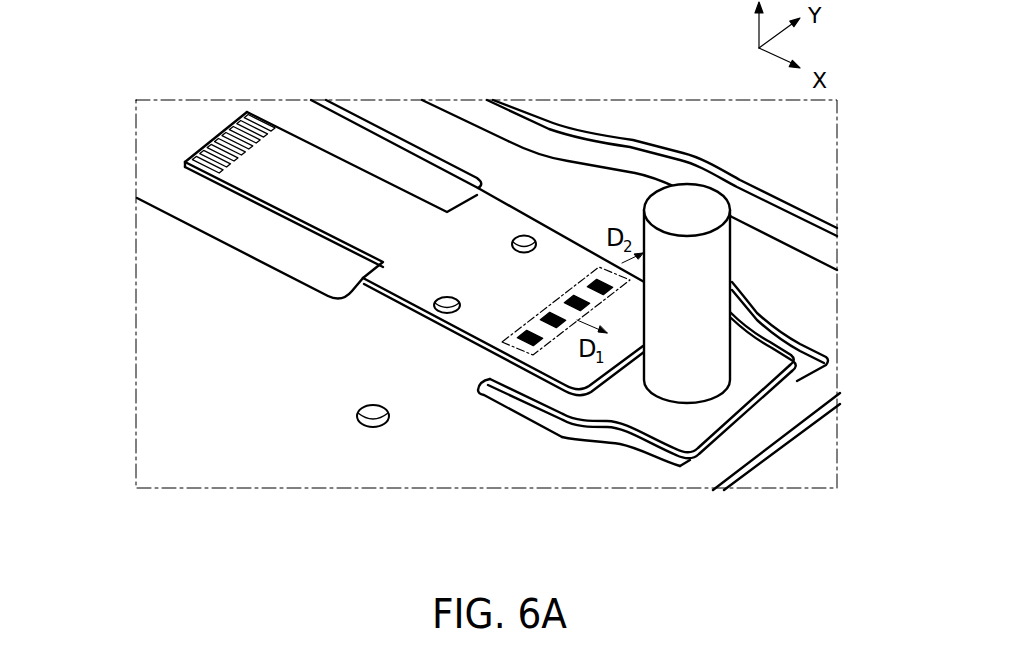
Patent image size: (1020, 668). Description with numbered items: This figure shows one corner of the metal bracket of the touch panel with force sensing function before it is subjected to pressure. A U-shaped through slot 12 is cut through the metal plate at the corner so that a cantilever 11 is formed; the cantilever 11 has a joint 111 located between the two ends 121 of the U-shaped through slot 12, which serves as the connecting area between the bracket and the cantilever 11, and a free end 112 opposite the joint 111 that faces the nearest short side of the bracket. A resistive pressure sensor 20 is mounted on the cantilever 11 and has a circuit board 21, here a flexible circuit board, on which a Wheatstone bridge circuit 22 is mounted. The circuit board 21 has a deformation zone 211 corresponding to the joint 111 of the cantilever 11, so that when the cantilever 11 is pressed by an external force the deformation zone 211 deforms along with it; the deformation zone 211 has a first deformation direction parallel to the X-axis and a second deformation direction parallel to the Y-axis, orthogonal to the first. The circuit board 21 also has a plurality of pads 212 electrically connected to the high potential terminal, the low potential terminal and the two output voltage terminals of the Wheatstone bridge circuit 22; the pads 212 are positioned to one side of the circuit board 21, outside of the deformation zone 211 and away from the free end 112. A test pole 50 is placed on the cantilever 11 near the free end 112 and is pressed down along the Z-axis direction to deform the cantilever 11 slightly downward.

The cantilever 11 is at (603, 402).
The joint 111 is at (518, 378).
The free end 112 is at (743, 382).
The U-shaped through slot 12 is at (800, 378).
The end of U-shaped through slot 121 is at (480, 386).
The resistive pressure sensor 20 is at (550, 230).
The circuit board 21 is at (497, 220).
The deformation zone 211 is at (598, 266).
The pads 212 is at (257, 133).
The Wheatstone bridge circuit 22 is at (495, 355).
The test pole 50 is at (712, 270).